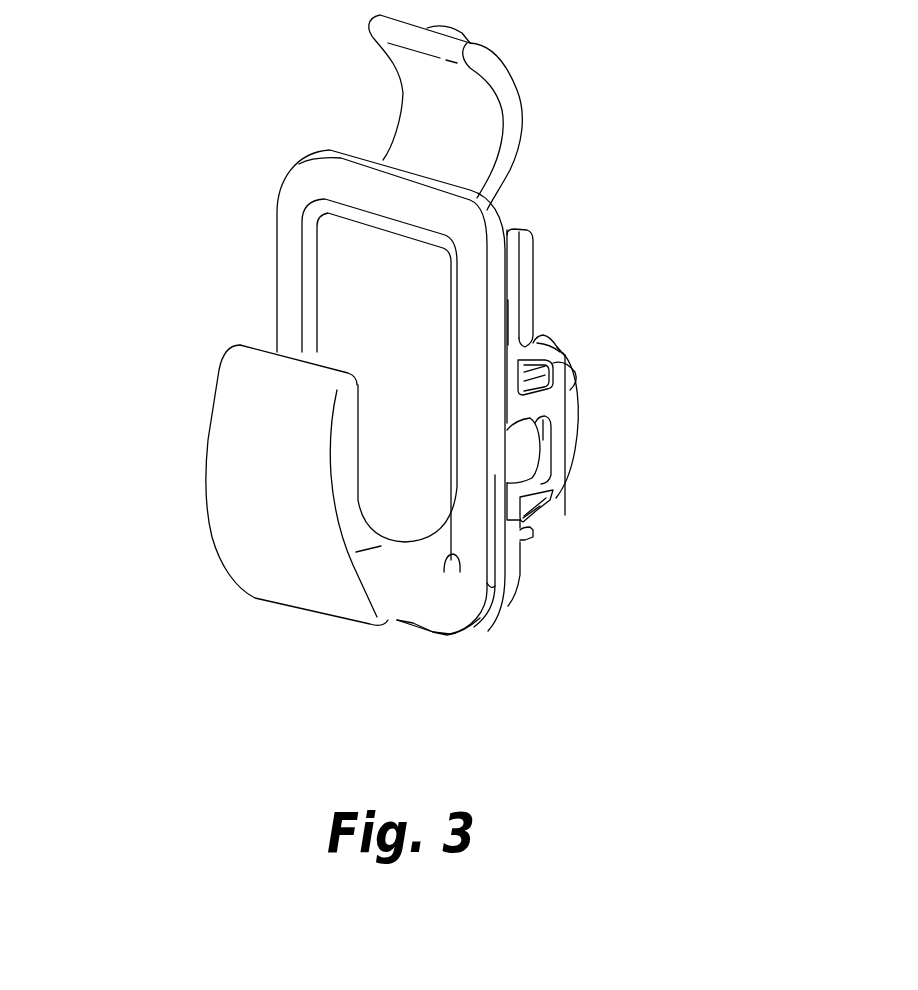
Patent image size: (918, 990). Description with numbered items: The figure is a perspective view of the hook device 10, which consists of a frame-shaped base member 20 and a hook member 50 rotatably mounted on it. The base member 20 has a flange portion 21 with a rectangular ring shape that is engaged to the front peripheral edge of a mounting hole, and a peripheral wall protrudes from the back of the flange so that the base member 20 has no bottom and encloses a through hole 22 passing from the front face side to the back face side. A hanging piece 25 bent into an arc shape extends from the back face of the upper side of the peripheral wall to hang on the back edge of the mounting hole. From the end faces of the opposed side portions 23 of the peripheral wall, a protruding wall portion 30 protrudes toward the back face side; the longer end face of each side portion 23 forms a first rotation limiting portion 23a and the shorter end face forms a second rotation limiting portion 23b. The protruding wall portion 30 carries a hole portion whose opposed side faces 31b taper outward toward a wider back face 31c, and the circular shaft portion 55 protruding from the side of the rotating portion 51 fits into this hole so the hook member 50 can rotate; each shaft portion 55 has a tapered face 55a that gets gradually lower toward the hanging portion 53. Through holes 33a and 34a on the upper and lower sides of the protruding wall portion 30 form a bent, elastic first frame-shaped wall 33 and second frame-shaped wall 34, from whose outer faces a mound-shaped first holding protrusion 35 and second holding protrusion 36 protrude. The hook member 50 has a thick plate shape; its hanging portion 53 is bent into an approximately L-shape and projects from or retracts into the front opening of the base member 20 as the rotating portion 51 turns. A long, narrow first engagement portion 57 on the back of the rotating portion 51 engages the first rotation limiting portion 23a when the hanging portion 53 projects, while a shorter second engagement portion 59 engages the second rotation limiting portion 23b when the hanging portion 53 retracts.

The hook device 10 is at (122, 238).
The base member 20 is at (298, 154).
The flange portion 21 is at (420, 613).
The through hole 22 is at (452, 572).
The side portion 23 is at (509, 279).
The first rotation limiting portion 23a is at (530, 300).
The second rotation limiting portion 23b is at (522, 549).
The hanging piece 25 is at (503, 97).
The protruding wall portion 30 is at (576, 488).
The side face of hole portion 31b is at (527, 413).
The back face of hole portion 31c is at (545, 428).
The first frame-shaped wall 33 is at (550, 343).
The through hole 33a is at (567, 353).
The second frame-shaped wall 34 is at (545, 508).
The through hole 34a is at (551, 504).
The first holding protrusion 35 is at (540, 328).
The second holding protrusion 36 is at (543, 542).
The hook member 50 is at (220, 347).
The rotating portion 51 is at (343, 238).
The hanging portion 53 is at (217, 470).
The shaft portion 55 is at (528, 452).
The tapered face 55a is at (491, 590).
The first engagement portion 57 is at (530, 250).
The second engagement portion 59 is at (577, 382).